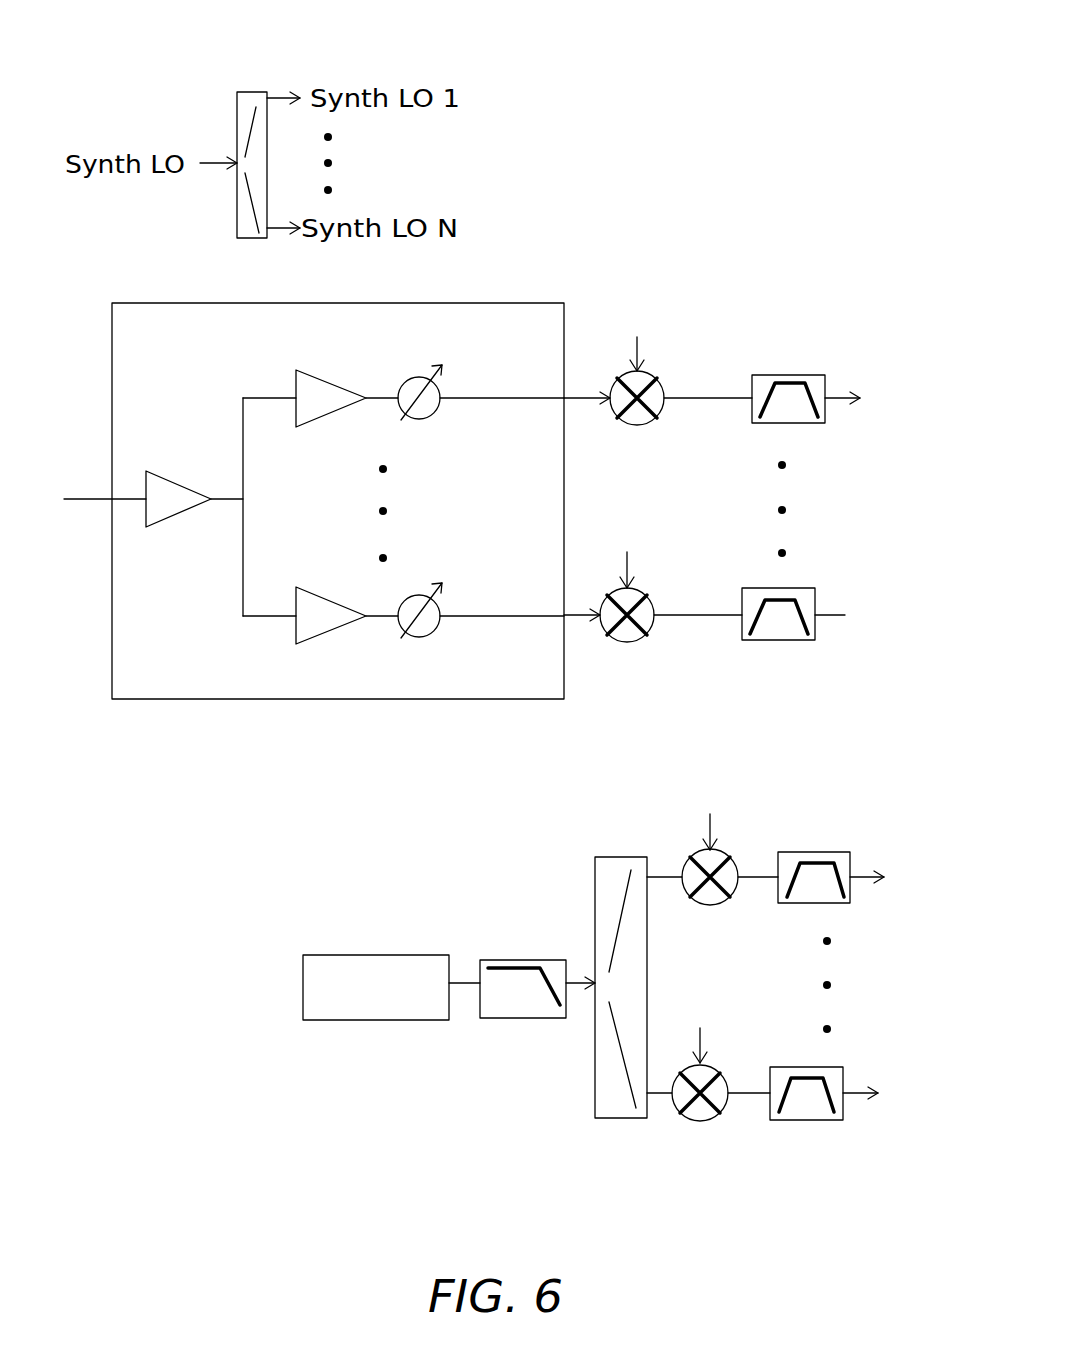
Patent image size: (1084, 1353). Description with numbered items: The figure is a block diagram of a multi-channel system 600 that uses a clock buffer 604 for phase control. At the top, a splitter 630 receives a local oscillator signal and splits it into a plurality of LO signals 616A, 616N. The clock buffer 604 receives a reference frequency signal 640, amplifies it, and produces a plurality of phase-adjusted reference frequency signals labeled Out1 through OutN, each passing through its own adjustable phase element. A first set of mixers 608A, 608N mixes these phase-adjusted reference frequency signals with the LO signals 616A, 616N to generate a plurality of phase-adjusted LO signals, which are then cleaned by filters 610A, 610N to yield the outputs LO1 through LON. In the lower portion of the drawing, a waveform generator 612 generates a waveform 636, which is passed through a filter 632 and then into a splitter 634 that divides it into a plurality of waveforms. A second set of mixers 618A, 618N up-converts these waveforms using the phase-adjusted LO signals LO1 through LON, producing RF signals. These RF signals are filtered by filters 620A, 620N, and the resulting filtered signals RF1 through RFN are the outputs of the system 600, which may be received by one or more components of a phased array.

The multi-channel system 600 is at (712, 29).
The clock buffer 604 is at (495, 300).
The mixer 608A is at (637, 425).
The mixer 608N is at (627, 642).
The filter 610A is at (790, 375).
The filter 610N is at (778, 640).
The waveform generator 612 is at (370, 1021).
The LO signal 616A is at (278, 96).
The LO signal 616N is at (287, 232).
The mixer 618A is at (710, 905).
The mixer 618N is at (700, 1123).
The filter 620A is at (815, 852).
The filter 620N is at (803, 1122).
The splitter 630 is at (250, 92).
The filter 632 is at (516, 1020).
The splitter 634 is at (615, 1122).
The waveform 636 is at (465, 986).
The reference frequency signal 640 is at (77, 507).